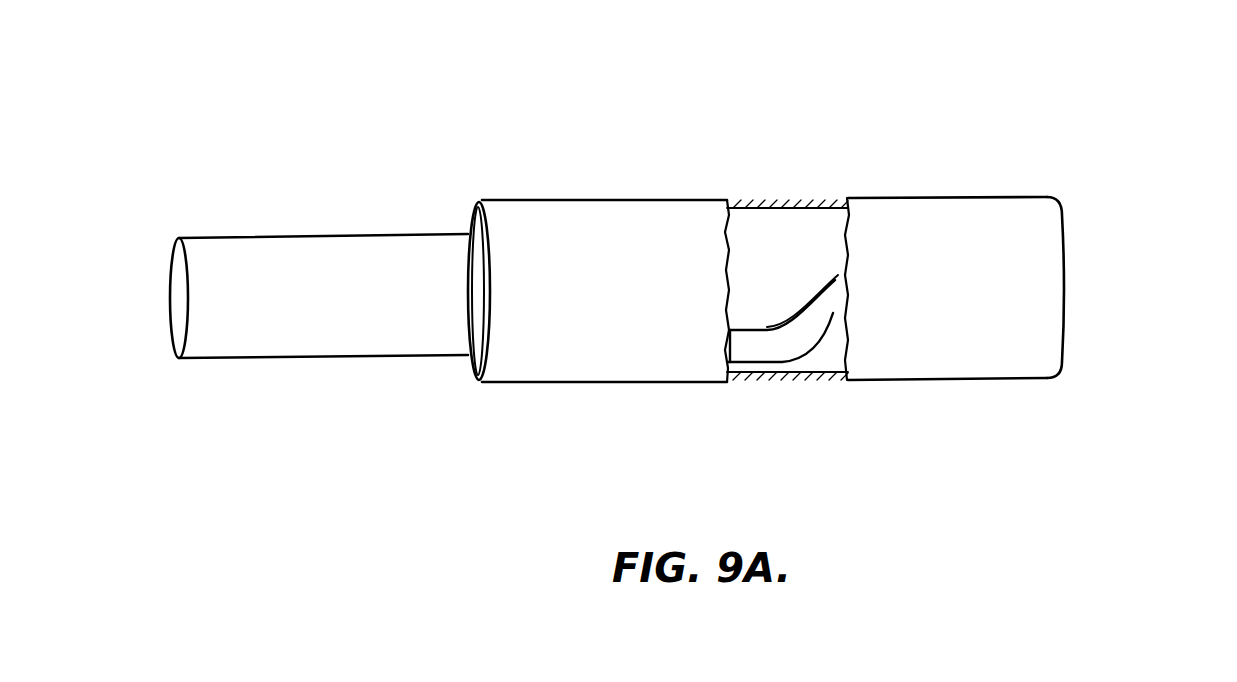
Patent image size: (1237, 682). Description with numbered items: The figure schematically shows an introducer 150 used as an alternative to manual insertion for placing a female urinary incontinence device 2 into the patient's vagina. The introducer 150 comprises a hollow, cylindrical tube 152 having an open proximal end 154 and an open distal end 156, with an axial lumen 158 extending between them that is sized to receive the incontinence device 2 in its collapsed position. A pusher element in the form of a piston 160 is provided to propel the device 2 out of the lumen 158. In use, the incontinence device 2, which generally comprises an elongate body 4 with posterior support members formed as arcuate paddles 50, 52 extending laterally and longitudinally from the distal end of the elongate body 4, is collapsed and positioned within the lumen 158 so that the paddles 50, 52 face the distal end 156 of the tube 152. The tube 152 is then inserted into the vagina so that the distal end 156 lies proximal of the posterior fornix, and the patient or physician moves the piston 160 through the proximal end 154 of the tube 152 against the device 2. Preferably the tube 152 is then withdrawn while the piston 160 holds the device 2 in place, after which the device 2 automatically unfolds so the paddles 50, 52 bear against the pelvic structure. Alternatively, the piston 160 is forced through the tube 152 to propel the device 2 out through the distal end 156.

The introducer 150 is at (1143, 63).
The cylindrical tube 152 is at (650, 197).
The proximal end 154 is at (472, 222).
The distal end 156 is at (1068, 231).
The axial lumen 158 is at (798, 221).
The piston 160 is at (343, 365).
The female urinary incontinence device 2 is at (787, 383).
The elongate body 4 is at (745, 327).
The arcuate paddle 50 is at (820, 280).
The arcuate paddle 52 is at (838, 278).